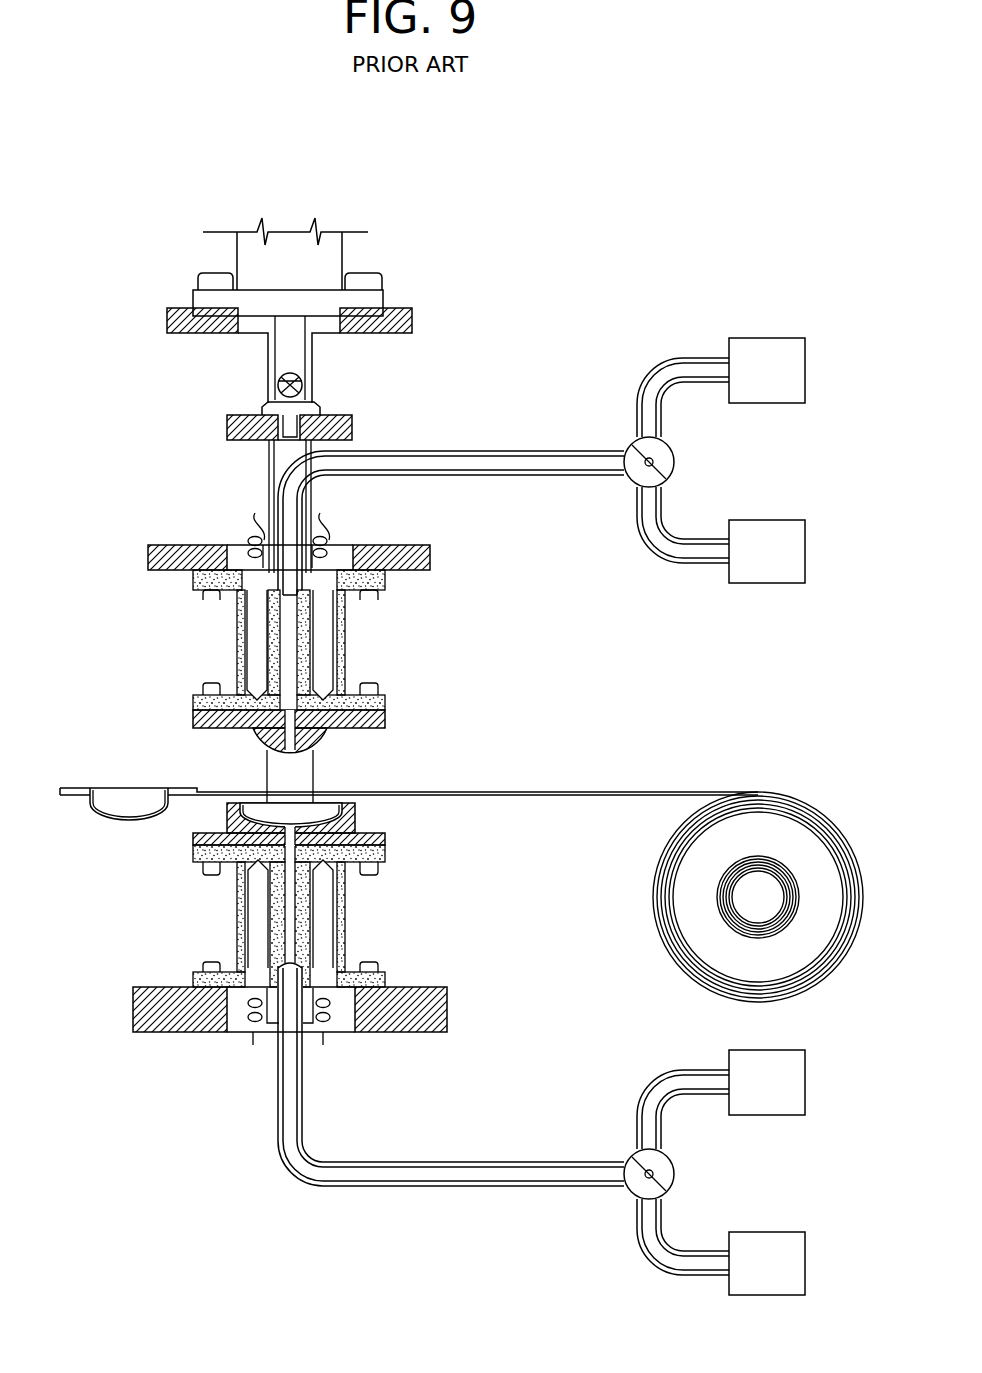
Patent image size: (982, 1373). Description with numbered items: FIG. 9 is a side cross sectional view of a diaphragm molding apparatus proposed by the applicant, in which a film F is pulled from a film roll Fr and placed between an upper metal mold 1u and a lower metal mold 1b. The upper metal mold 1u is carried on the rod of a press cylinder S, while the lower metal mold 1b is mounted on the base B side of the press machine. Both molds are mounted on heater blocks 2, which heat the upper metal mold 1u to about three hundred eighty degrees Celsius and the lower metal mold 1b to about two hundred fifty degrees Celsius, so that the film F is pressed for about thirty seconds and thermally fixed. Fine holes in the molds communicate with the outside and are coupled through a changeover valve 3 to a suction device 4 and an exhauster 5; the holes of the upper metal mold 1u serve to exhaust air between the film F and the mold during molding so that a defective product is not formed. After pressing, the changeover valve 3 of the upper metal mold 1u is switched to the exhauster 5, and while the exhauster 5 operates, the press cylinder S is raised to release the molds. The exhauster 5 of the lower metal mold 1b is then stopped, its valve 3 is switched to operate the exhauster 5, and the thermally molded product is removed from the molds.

The press cylinder S is at (342, 250).
The heater block 2 is at (345, 637).
The upper metal mold 1u is at (193, 712).
The lower metal mold 1b is at (196, 836).
The film F is at (585, 797).
The film roll Fr is at (797, 847).
The base B is at (447, 1010).
The changeover valve 3 is at (675, 458).
The suction device 4 is at (795, 540).
The exhauster 5 is at (795, 352).